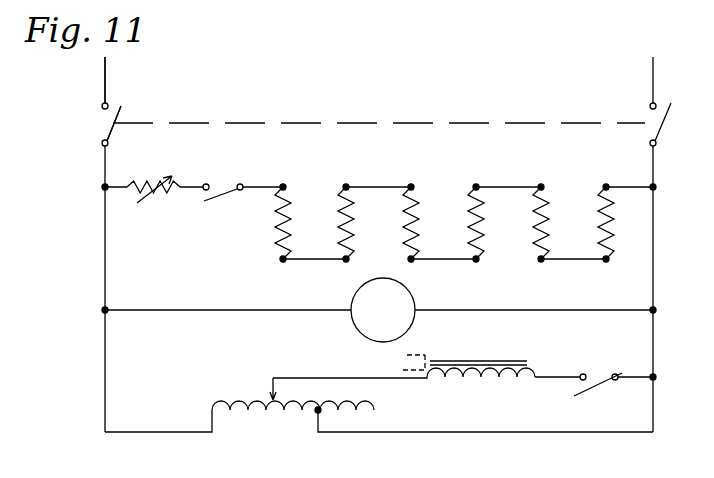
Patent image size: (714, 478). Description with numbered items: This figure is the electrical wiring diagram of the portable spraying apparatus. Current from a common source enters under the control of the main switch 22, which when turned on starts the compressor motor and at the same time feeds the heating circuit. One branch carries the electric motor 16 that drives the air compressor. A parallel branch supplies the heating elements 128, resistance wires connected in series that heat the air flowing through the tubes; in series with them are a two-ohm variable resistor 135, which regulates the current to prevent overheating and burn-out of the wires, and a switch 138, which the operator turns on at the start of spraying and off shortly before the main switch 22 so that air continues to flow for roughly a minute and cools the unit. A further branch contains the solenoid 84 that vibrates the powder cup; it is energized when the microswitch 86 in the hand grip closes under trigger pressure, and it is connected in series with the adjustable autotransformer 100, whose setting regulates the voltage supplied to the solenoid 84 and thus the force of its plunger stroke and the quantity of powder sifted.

The main switch 22 is at (118, 121).
The variable resistor 135 is at (172, 176).
The switch 138 is at (218, 198).
The electrical elements 128 is at (343, 210).
The electric motor 16 is at (411, 294).
The solenoid 84 is at (487, 378).
The microswitch 86 is at (593, 378).
The adjustable autotransformer 100 is at (271, 410).